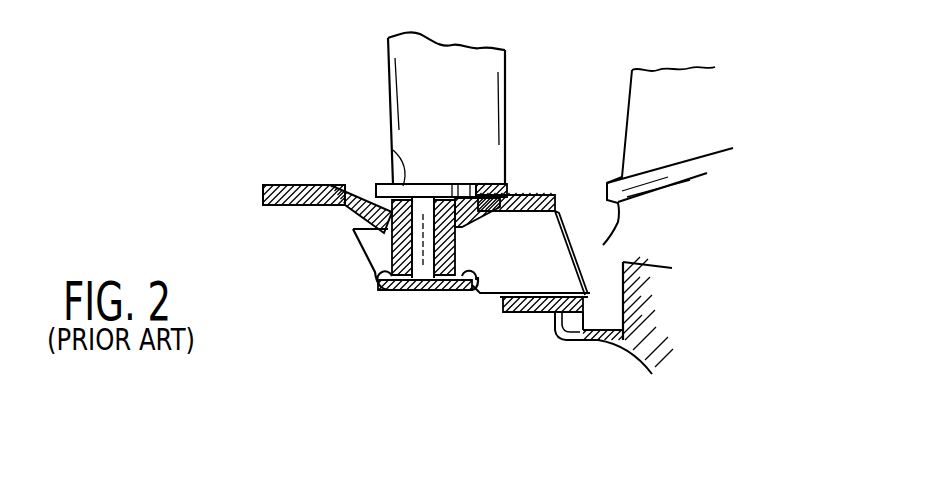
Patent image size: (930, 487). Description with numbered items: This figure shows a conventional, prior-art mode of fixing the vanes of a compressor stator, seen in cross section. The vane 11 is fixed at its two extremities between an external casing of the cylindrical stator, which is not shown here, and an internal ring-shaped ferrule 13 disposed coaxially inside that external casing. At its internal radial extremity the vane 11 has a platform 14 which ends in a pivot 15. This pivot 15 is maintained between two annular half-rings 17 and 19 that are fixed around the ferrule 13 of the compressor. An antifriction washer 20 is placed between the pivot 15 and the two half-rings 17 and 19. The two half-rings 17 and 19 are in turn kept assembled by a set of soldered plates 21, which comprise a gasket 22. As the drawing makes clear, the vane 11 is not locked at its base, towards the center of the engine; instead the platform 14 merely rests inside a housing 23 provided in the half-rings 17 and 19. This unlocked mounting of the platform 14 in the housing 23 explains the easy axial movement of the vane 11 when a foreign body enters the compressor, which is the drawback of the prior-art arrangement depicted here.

The vane 11 is at (485, 65).
The ferrule 13 is at (630, 342).
The platform 14 is at (400, 185).
The pivot 15 is at (418, 262).
The half-ring 17 is at (262, 193).
The half-ring 19 is at (505, 232).
The antifriction washer 20 is at (460, 185).
The soldered plates 21 is at (352, 252).
The gasket 22 is at (525, 303).
The housing 23 is at (340, 205).